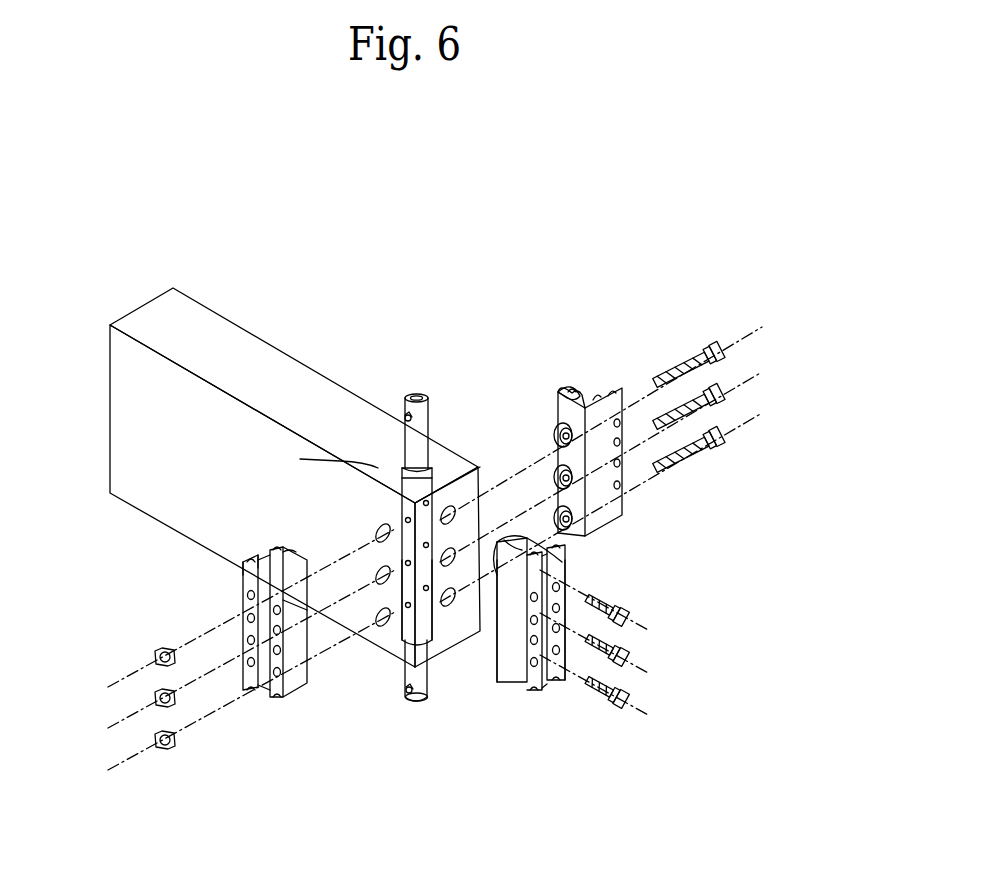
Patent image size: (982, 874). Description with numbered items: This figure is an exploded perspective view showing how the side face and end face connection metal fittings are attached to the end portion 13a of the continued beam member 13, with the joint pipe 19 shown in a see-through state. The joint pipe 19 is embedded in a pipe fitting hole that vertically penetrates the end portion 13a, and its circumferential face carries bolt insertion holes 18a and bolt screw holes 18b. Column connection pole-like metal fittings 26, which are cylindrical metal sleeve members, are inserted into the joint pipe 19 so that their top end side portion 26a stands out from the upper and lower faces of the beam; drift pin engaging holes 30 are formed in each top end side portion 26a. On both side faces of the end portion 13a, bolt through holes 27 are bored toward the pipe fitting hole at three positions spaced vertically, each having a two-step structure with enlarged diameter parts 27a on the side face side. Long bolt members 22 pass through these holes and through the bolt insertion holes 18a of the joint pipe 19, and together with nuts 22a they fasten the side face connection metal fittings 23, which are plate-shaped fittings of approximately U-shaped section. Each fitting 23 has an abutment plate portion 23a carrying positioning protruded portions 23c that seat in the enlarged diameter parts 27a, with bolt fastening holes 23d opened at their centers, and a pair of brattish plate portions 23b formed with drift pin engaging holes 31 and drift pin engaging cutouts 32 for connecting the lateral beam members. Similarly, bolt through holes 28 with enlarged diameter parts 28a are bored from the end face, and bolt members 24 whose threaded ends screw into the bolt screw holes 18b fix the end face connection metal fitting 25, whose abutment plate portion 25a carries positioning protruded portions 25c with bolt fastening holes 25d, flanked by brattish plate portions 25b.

The continued beam member 13 is at (215, 325).
The end portion of the continued beam member 13a is at (315, 459).
The bolt insertion holes 18a is at (403, 520).
The bolt screw holes 18b is at (428, 494).
The joint pipe 19 is at (408, 483).
The long bolt members 22 is at (676, 418).
The nuts 22a is at (154, 699).
The side face connection metal fittings 23 is at (620, 513).
The abutment plate portions 23a is at (568, 395).
The brattish plate portions 23b is at (577, 392).
The positioning protruded portions 23c is at (558, 433).
The bolt fastening holes 23d is at (558, 478).
The bolt members 24 is at (612, 650).
The end face connection metal fitting 25 is at (545, 558).
The abutment plate portion 25a is at (495, 660).
The brattish plate portions 25b is at (560, 665).
The positioning protruded portions 25c is at (498, 540).
The bolt fastening holes 25d is at (540, 542).
The column connection pole-like metal fittings 26 is at (421, 433).
The top end side portion 26a is at (468, 564).
The bolt through holes 27 is at (386, 605).
The enlarged diameter parts 27a is at (380, 623).
The bolt through holes 28 is at (447, 610).
The enlarged diameter parts 28a is at (451, 608).
The drift pin engaging holes 30 is at (406, 417).
The drift pin engaging holes 31 is at (622, 487).
The drift pin engaging cutout 32 is at (612, 392).